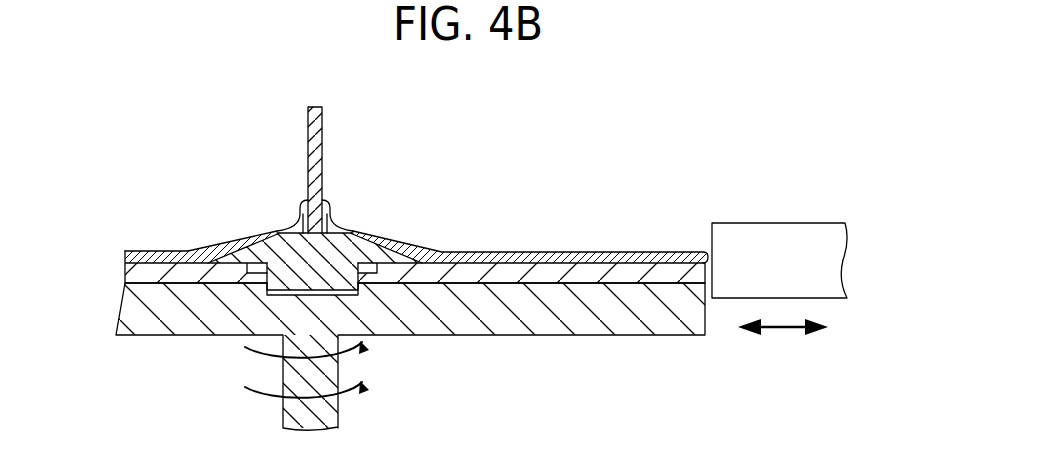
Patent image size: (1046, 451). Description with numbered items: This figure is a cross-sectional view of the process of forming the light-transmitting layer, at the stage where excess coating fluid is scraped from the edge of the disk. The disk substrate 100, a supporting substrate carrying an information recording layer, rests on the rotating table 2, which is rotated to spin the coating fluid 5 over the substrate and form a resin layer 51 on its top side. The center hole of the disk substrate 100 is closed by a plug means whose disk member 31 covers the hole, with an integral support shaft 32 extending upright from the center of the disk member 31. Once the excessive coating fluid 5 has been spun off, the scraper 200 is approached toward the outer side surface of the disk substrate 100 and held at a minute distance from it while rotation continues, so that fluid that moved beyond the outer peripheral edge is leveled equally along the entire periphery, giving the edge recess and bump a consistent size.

The rotating table 2 is at (120, 325).
The disk substrate 100 is at (124, 280).
The disk member 31 is at (360, 243).
The resin layer 51 is at (124, 254).
The support shaft 32 is at (320, 128).
The coating fluid 5 is at (299, 212).
The scraper 200 is at (783, 233).